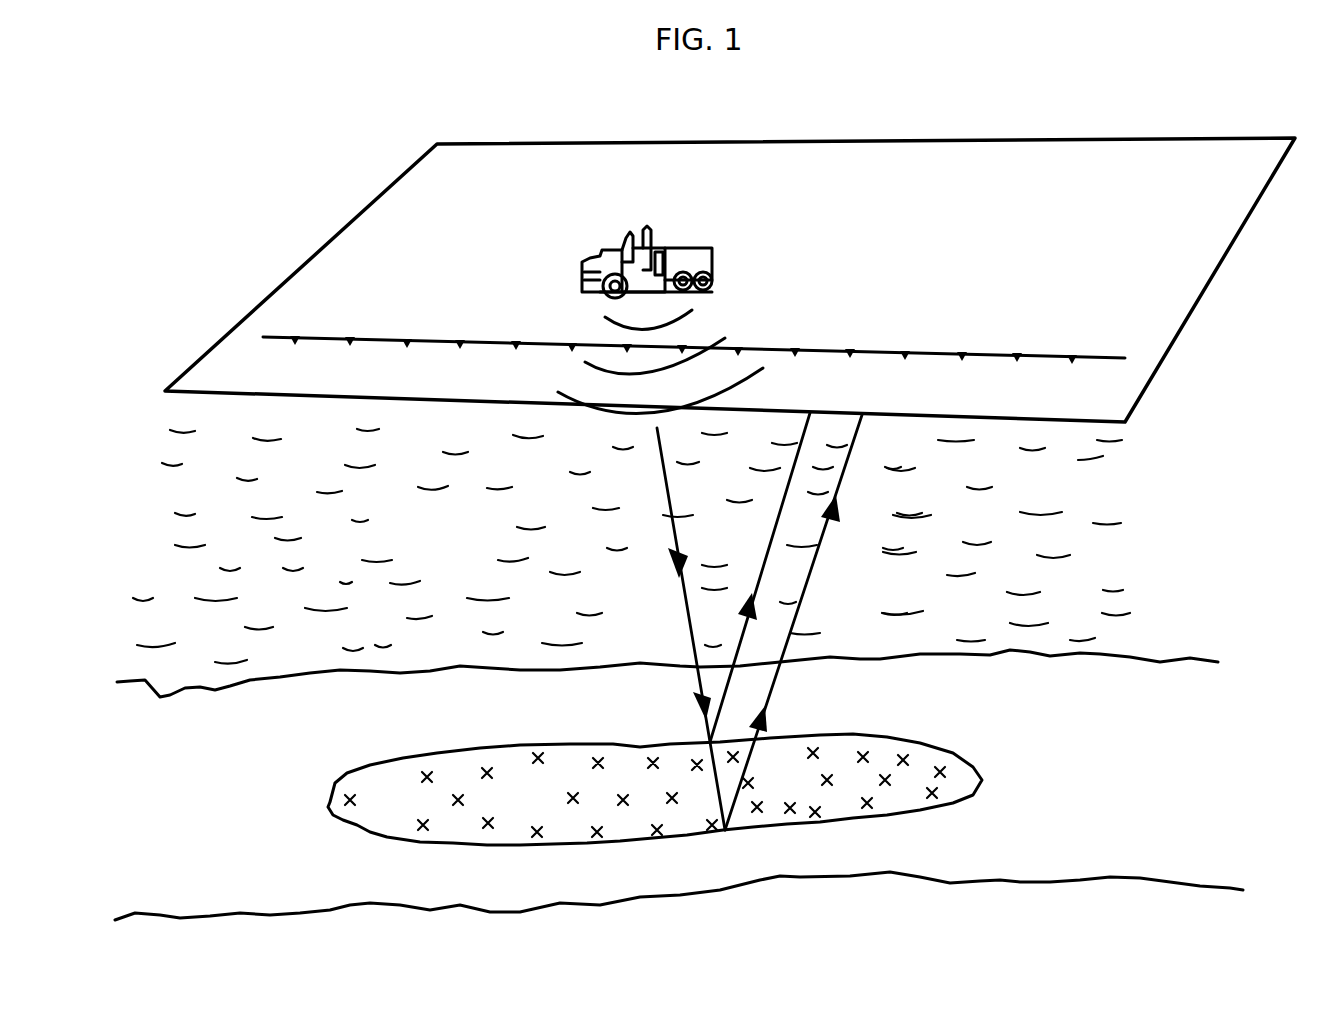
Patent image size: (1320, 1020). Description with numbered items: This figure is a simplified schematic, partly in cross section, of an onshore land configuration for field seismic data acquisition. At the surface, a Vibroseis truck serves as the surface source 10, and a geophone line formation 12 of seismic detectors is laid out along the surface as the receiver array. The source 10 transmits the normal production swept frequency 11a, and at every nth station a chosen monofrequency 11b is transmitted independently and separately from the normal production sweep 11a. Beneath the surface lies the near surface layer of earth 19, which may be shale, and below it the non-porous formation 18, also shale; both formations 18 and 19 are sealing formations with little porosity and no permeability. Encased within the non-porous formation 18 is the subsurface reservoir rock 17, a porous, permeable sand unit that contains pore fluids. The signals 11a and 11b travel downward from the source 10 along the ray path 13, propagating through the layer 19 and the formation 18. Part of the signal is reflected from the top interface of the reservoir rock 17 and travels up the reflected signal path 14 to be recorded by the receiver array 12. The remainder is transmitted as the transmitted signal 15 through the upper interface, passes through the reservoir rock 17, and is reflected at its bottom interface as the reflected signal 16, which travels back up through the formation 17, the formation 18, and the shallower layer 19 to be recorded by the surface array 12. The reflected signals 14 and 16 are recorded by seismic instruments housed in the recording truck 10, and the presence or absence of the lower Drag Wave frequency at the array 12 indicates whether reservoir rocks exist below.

The surface source 10 is at (647, 244).
The normal production swept frequency 11a is at (679, 305).
The monofrequency 11b is at (671, 362).
The geophone line formation 12 is at (694, 336).
The ray path 13 is at (678, 585).
The reflected signal path 14 is at (760, 577).
The transmitted signal 15 is at (705, 786).
The reflected signal 16 is at (795, 622).
The reservoir rock formation 17 is at (655, 789).
The non-porous formation 18 is at (679, 785).
The near surface layer of earth 19 is at (631, 546).